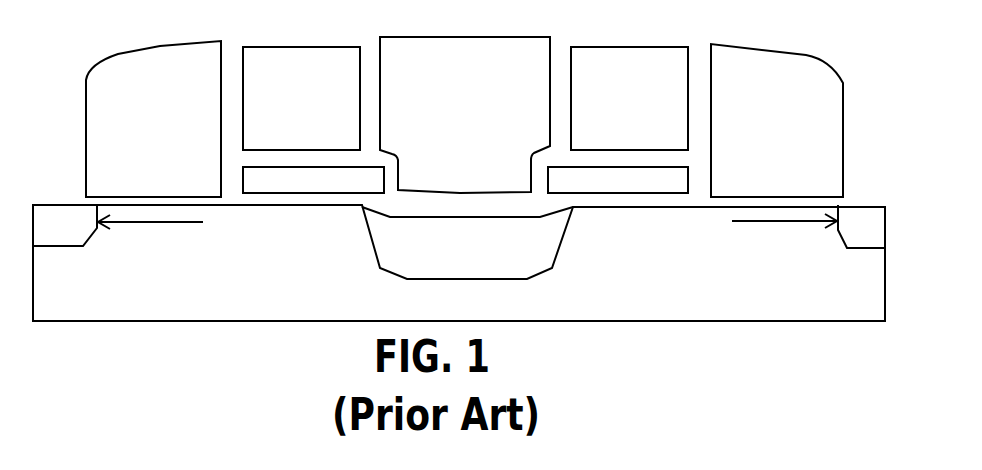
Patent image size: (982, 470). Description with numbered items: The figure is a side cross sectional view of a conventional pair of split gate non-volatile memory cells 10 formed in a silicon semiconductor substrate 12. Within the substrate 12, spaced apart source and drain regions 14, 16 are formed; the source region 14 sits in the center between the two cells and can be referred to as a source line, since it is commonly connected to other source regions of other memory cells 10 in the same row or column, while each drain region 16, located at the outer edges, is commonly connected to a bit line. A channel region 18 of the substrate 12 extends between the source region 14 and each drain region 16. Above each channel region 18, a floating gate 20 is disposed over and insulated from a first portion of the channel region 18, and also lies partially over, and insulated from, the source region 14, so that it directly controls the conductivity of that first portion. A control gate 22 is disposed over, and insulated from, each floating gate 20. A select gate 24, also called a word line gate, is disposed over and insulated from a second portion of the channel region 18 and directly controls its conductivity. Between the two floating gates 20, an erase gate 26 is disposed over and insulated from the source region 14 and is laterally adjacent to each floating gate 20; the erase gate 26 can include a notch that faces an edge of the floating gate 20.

The split gate non-volatile memory cell 10 is at (72, 56).
The silicon semiconductor substrate 12 is at (44, 317).
The source region 14 is at (451, 264).
The drain region 16 is at (44, 240).
The channel region 18 is at (214, 237).
The floating gate 20 is at (296, 195).
The control gate 22 is at (289, 120).
The select gate 24 is at (143, 147).
The erase gate 26 is at (453, 126).